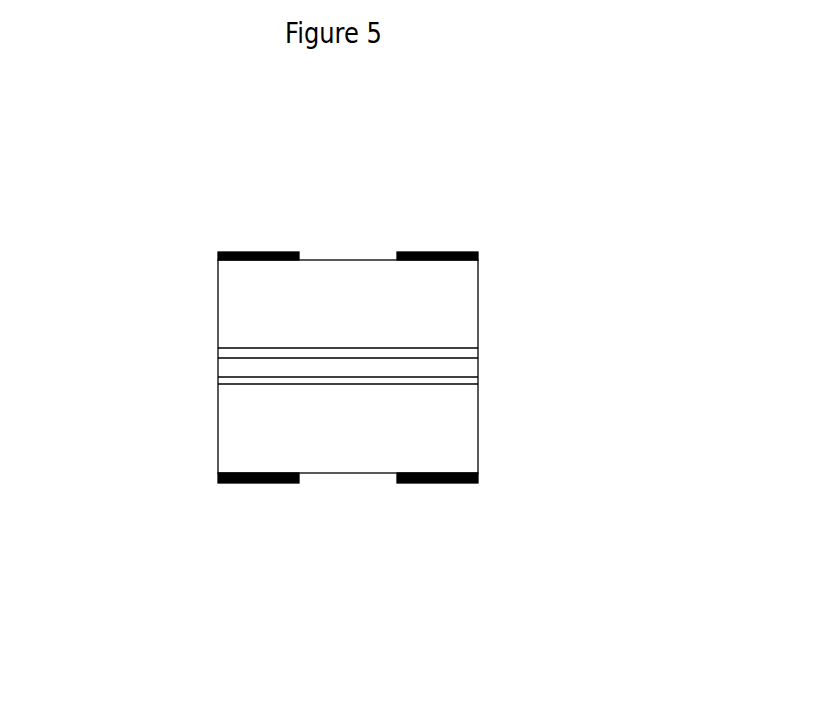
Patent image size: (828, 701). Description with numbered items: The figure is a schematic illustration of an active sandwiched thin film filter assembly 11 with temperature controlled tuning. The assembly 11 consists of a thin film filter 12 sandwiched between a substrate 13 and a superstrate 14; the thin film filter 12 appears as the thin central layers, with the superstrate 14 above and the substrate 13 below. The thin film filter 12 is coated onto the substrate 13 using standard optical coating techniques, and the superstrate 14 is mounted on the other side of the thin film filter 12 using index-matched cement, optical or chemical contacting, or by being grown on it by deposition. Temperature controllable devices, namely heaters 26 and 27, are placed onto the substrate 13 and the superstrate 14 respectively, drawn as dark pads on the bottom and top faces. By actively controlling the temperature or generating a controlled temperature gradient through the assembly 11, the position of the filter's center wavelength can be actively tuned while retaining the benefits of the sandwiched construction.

The sandwiched thin film filter assembly 11 is at (545, 214).
The thin film filter 12 is at (223, 360).
The substrate 13 is at (223, 450).
The superstrate 14 is at (245, 317).
The heater 26 is at (290, 493).
The heater 27 is at (422, 250).